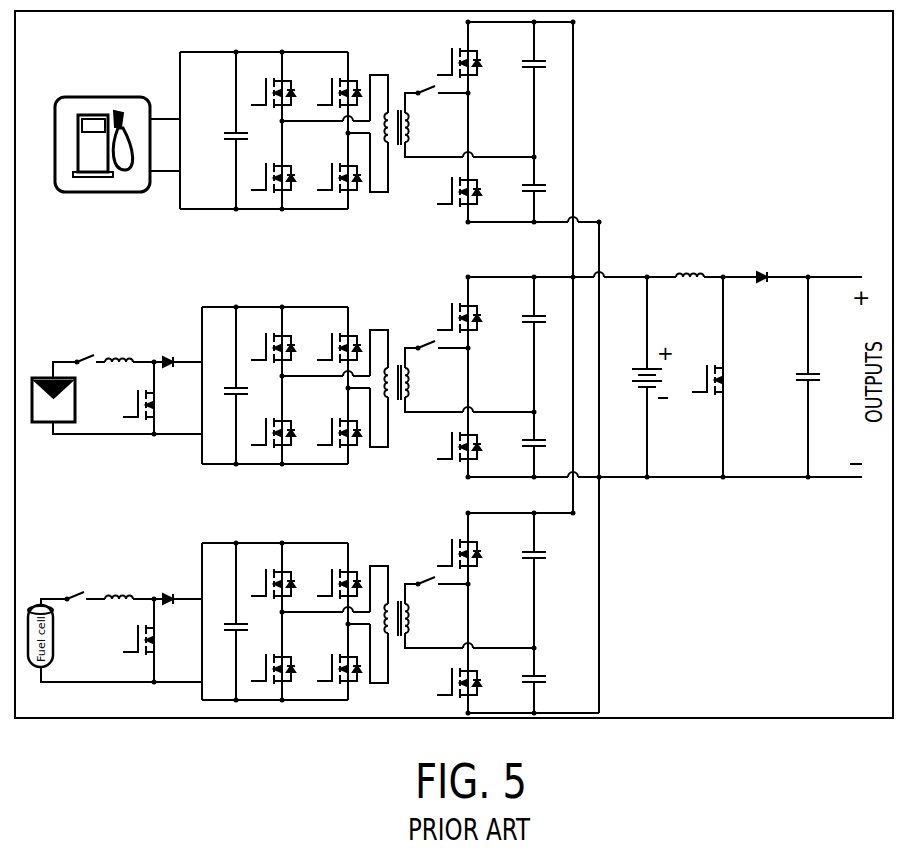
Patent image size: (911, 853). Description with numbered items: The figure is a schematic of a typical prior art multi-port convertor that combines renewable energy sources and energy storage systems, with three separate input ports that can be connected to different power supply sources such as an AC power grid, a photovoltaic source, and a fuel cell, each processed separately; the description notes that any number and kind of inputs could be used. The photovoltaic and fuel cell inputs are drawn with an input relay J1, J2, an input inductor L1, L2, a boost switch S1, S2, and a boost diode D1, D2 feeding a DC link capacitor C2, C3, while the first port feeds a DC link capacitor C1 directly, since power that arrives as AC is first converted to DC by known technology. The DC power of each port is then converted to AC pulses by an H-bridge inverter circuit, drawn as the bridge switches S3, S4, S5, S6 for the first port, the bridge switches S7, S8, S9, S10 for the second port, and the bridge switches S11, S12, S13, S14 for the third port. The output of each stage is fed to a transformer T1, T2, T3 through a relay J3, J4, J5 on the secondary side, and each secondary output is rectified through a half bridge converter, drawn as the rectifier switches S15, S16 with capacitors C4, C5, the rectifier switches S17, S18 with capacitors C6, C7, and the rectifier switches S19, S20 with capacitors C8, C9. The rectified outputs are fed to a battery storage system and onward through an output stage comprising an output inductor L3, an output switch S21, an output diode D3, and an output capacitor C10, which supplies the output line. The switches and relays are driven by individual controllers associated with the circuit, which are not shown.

The boost switch (solar input) S1 is at (149, 405).
The boost switch (fuel cell input) S2 is at (150, 640).
The full-bridge switch S3 is at (277, 80).
The full-bridge switch S4 is at (342, 80).
The full-bridge switch S5 is at (277, 165).
The full-bridge switch S6 is at (342, 164).
The full-bridge switch S7 is at (277, 335).
The full-bridge switch S8 is at (342, 335).
The full-bridge switch S9 is at (277, 420).
The full-bridge switch S10 is at (344, 419).
The full-bridge switch S11 is at (280, 571).
The full-bridge switch S12 is at (344, 571).
The full-bridge switch S13 is at (280, 656).
The full-bridge switch S14 is at (344, 655).
The rectifier switch S15 is at (467, 52).
The rectifier switch S16 is at (470, 184).
The rectifier switch S17 is at (467, 307).
The rectifier switch S18 is at (470, 439).
The rectifier switch S19 is at (467, 543).
The rectifier switch S20 is at (470, 675).
The output boost switch S21 is at (724, 380).
The DC link capacitor C1 is at (226, 137).
The DC link capacitor C2 is at (226, 392).
The DC link capacitor C3 is at (226, 628).
The output capacitor C4 is at (543, 65).
The output capacitor C5 is at (543, 187).
The output capacitor C6 is at (543, 320).
The output capacitor C7 is at (543, 442).
The output capacitor C8 is at (543, 556).
The output capacitor C9 is at (543, 678).
The output filter capacitor C10 is at (821, 380).
The transformer T1 is at (396, 88).
The transformer T2 is at (396, 343).
The transformer T3 is at (396, 579).
The switch/junction J1 is at (84, 345).
The switch/junction J2 is at (72, 582).
The switch/junction J3 is at (423, 78).
The switch/junction J4 is at (423, 333).
The switch/junction J5 is at (423, 569).
The boost inductor L1 is at (119, 344).
The boost inductor L2 is at (119, 581).
The output inductor L3 is at (690, 260).
The boost diode D1 is at (168, 346).
The boost diode D2 is at (168, 584).
The output diode D3 is at (764, 263).